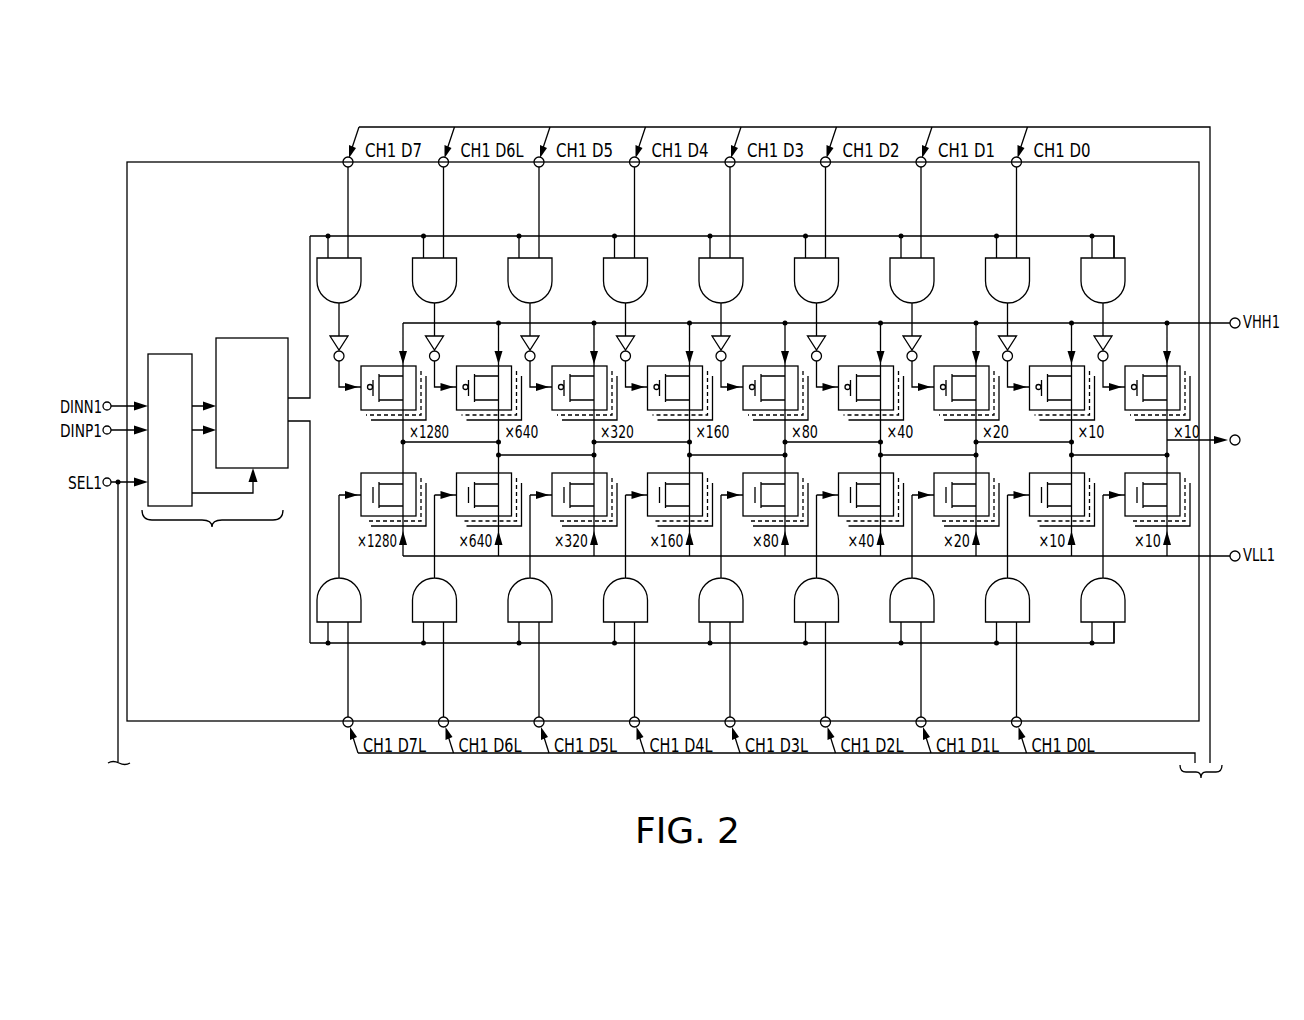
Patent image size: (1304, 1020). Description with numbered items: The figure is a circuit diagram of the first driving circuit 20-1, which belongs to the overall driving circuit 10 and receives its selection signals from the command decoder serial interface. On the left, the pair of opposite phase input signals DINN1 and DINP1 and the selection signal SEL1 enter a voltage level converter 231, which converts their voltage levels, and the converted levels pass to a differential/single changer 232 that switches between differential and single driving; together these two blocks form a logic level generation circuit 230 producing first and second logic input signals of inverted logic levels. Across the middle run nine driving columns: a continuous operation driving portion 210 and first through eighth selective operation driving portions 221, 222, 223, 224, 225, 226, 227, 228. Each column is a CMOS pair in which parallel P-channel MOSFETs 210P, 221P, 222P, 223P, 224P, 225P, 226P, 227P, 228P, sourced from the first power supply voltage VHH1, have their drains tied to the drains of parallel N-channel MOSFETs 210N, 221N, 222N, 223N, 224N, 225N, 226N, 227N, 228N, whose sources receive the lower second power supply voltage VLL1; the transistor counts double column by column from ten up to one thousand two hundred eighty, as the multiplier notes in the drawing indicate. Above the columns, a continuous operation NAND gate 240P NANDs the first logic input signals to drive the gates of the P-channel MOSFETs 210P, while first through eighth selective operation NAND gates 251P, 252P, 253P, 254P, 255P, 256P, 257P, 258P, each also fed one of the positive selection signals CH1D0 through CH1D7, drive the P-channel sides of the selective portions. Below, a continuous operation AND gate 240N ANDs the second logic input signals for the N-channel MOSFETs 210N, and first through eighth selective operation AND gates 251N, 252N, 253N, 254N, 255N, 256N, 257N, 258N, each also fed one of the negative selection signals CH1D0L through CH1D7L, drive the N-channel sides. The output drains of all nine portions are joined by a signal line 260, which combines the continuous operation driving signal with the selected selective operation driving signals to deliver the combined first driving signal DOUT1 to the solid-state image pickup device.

The drive circuit 10 is at (1166, 97).
The first driving circuit 20-1 is at (162, 162).
The logic level generation circuit 230 is at (226, 439).
The voltage level converter 231 is at (169, 352).
The differential/single changer 232 is at (252, 336).
The signal line 260 is at (1209, 437).
The eighth selective operation NAND gate 258P is at (350, 318).
The seventh selective operation NAND gate 257P is at (460, 251).
The sixth selective operation NAND gate 256P is at (555, 251).
The fifth selective operation NAND gate 255P is at (651, 251).
The fourth selective operation NAND gate 254P is at (746, 251).
The third selective operation NAND gate 253P is at (842, 251).
The second selective operation NAND gate 252P is at (937, 251).
The first selective operation NAND gate 251P is at (1033, 251).
The continuous operation NAND gate 240P is at (1128, 285).
The P-channel MOSFETs 228P is at (383, 363).
The P-channel MOSFETs 227P is at (474, 382).
The P-channel MOSFETs 226P is at (569, 382).
The P-channel MOSFETs 225P is at (665, 382).
The P-channel MOSFETs 224P is at (760, 382).
The P-channel MOSFETs 223P is at (856, 382).
The P-channel MOSFETs 222P is at (951, 382).
The P-channel MOSFETs 221P is at (1047, 382).
The P-channel MOSFETs 210P is at (1142, 382).
The N-channel MOSFETs 228N is at (357, 484).
The N-channel MOSFETs 227N is at (471, 499).
The N-channel MOSFETs 226N is at (565, 499).
The N-channel MOSFETs 225N is at (662, 499).
The N-channel MOSFETs 224N is at (756, 499).
The N-channel MOSFETs 223N is at (853, 499).
The N-channel MOSFETs 222N is at (947, 499).
The N-channel MOSFETs 221N is at (1044, 499).
The N-channel MOSFETs 210N is at (1138, 499).
The eighth selective operation driving portion 228 is at (375, 469).
The seventh selective operation driving portion 227 is at (471, 469).
The sixth selective operation driving portion 226 is at (565, 469).
The fifth selective operation driving portion 225 is at (662, 469).
The fourth selective operation driving portion 224 is at (756, 469).
The third selective operation driving portion 223 is at (853, 469).
The second selective operation driving portion 222 is at (947, 469).
The first selective operation driving portion 221 is at (1044, 469).
The continuous operation driving portion 210 is at (1138, 469).
The eighth selective operation AND gate 258N is at (320, 624).
The seventh selective operation AND gate 257N is at (423, 606).
The sixth selective operation AND gate 256N is at (518, 606).
The fifth selective operation AND gate 255N is at (614, 606).
The fourth selective operation AND gate 254N is at (709, 606).
The third selective operation AND gate 253N is at (805, 606).
The second selective operation AND gate 252N is at (900, 606).
The first selective operation AND gate 251N is at (996, 606).
The continuous operation AND gate 240N is at (1091, 591).